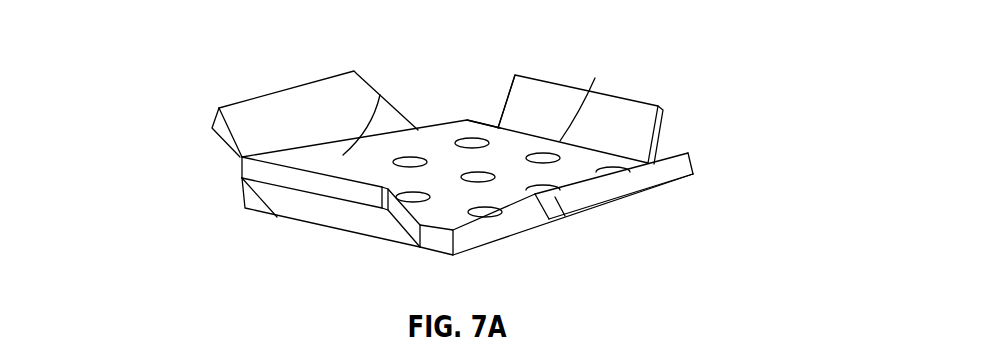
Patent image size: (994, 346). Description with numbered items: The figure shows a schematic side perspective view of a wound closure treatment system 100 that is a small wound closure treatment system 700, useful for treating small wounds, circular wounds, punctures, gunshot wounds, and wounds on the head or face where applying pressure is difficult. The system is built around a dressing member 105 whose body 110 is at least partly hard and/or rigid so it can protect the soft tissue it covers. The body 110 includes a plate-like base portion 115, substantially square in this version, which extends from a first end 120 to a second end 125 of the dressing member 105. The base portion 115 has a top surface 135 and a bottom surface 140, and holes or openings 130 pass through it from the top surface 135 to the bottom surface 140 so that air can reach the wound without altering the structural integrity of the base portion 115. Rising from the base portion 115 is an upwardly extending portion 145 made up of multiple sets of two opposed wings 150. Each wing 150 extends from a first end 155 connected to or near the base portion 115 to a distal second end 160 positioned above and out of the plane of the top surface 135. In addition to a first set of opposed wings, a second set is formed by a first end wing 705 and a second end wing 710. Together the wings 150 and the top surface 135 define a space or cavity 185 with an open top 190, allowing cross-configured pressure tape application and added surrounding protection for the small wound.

The small wound closure treatment system 700 is at (117, 70).
The wound closure treatment system 100 is at (742, 62).
The dressing member 105 is at (758, 96).
The body 110 is at (756, 125).
The base portion 115 is at (528, 193).
The first end 120 is at (205, 91).
The second end 125 is at (472, 81).
The holes or openings 130 is at (483, 214).
The top surface 135 is at (429, 173).
The bottom surface 140 is at (432, 262).
The upwardly extending portion 145 is at (192, 161).
The wings 150 is at (310, 102).
The first end of wing 155 is at (380, 95).
The second end of wing 160 is at (258, 96).
The space or cavity 185 is at (485, 108).
The open top 190 is at (510, 73).
The first end wing 705 is at (367, 228).
The second end wing 710 is at (655, 110).